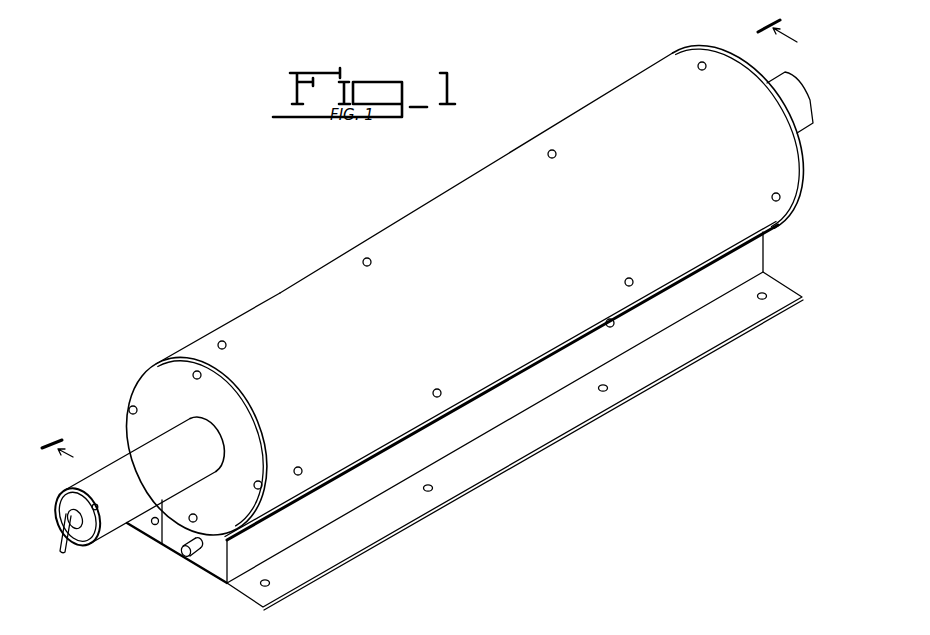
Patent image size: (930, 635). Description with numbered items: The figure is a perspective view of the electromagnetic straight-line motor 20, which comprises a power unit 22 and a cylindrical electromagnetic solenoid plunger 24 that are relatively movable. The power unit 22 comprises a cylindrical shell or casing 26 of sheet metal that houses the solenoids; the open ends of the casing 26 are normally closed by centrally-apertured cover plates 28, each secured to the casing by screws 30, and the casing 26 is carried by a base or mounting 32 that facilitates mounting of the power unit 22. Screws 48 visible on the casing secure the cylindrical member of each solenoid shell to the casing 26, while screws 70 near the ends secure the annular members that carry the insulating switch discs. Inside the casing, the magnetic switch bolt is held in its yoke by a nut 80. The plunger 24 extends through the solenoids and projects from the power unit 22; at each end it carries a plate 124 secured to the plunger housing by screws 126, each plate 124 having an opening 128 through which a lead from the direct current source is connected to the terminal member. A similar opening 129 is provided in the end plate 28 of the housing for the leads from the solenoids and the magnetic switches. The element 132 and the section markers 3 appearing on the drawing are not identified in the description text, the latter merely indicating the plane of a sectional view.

The electromagnetic straight-line motor 20 is at (422, 301).
The power unit 22 is at (445, 193).
The cylindrical electromagnetic solenoid plunger 24 is at (113, 461).
The cylindrical shell or casing 26 is at (275, 296).
The centrally-apertured cover plate 28 is at (131, 391).
The screw 30 is at (201, 375).
The base or mounting 32 is at (330, 581).
The screw 48 is at (369, 259).
The screw 70 is at (219, 342).
The nut 80 is at (129, 411).
The plate 124 is at (88, 538).
The screw 126 is at (96, 504).
The opening 128 is at (68, 518).
The opening 129 is at (182, 550).
The pin 132 is at (61, 549).
The section line 3- 3 is at (425, 247).